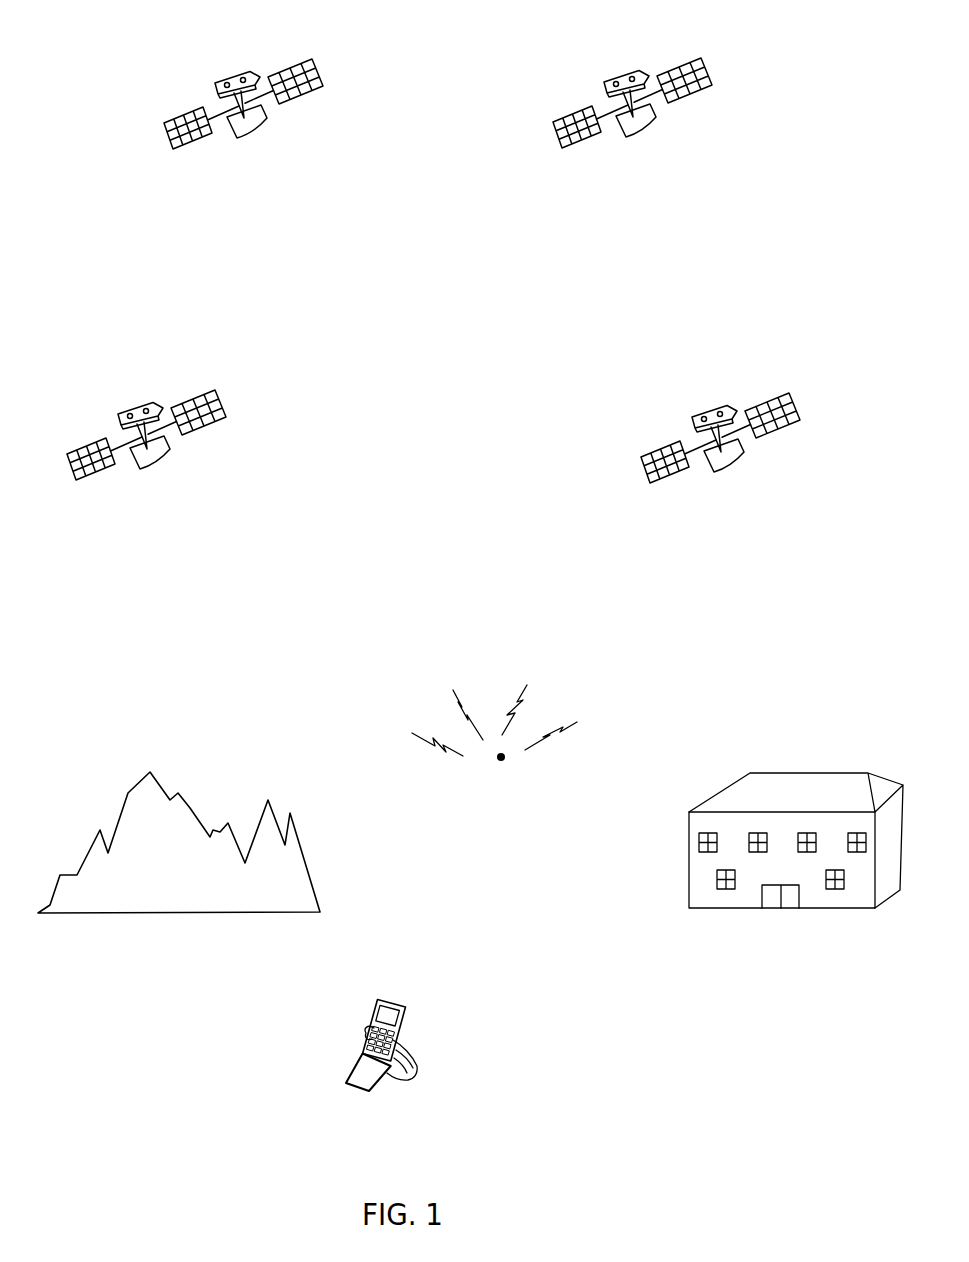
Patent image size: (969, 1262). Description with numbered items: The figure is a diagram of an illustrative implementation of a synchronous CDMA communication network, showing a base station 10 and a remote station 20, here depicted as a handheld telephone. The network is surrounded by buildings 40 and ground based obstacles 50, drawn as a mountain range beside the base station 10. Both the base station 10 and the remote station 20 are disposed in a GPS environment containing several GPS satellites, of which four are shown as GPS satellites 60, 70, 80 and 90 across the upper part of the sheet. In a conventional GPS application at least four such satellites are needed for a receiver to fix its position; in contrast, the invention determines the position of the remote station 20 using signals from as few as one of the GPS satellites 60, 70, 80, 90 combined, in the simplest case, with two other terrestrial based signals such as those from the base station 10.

The base station 10 is at (510, 819).
The remote station 20 is at (400, 1000).
The buildings 40 is at (803, 773).
The ground based obstacles 50 is at (302, 850).
The GPS satellite 60 is at (202, 391).
The GPS satellite 70 is at (297, 63).
The GPS satellite 80 is at (692, 56).
The GPS satellite 90 is at (780, 392).